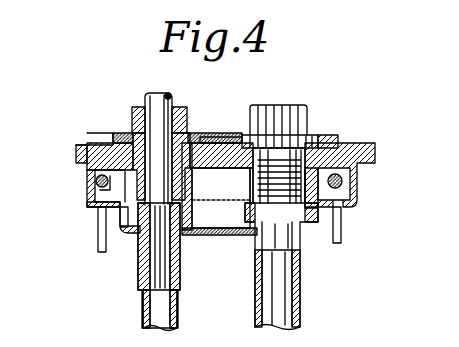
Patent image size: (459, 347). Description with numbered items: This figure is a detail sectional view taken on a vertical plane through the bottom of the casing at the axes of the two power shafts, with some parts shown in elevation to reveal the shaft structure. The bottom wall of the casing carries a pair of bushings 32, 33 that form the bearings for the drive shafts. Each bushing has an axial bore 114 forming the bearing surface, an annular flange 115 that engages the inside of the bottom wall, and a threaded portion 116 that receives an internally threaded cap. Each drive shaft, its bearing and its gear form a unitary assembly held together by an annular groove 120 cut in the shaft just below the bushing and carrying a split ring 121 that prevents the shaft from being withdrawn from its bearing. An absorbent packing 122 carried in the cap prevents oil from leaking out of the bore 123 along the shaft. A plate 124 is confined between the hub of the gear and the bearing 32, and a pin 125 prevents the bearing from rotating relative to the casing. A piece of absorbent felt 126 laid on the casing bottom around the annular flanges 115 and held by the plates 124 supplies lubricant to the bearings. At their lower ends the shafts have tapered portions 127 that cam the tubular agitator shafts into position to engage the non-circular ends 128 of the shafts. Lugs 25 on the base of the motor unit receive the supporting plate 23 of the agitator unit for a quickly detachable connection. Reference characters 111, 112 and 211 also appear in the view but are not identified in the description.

The lug 25 is at (87, 172).
The supporting plate 23 is at (88, 204).
The bushing 32 is at (190, 133).
The bushing 33 is at (268, 155).
The flange 111 is at (87, 143).
The chamber 112 is at (250, 206).
The axial bore 114 is at (114, 137).
The annular flange 115 is at (138, 108).
The threaded portion 116 is at (250, 180).
The annular groove 120 is at (132, 214).
The split ring 121 is at (125, 207).
The absorbent packing 122 is at (182, 214).
The bore 123 is at (150, 232).
The plate 124 is at (118, 134).
The pin 125 is at (222, 135).
The absorbent felt 126 is at (333, 134).
The tapered portion 127 is at (175, 284).
The non-circular end 128 is at (170, 258).
The contact ball 211 is at (344, 180).